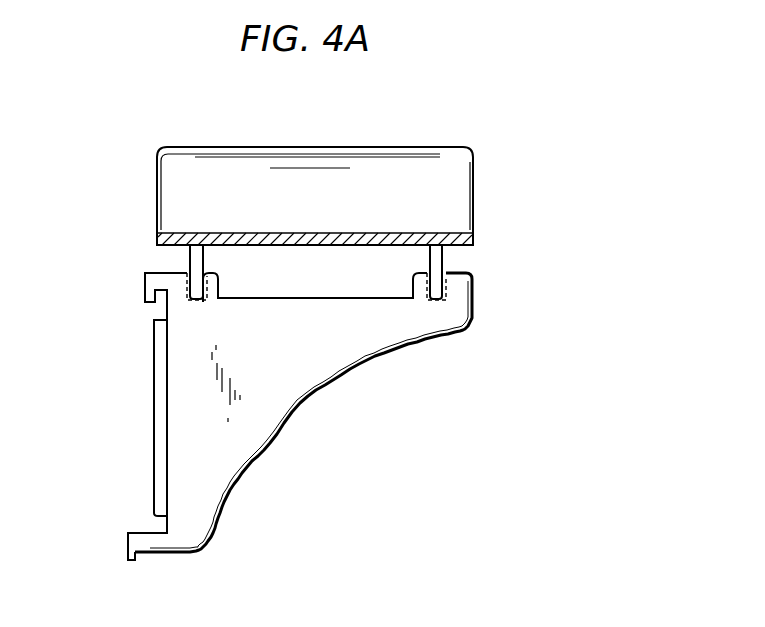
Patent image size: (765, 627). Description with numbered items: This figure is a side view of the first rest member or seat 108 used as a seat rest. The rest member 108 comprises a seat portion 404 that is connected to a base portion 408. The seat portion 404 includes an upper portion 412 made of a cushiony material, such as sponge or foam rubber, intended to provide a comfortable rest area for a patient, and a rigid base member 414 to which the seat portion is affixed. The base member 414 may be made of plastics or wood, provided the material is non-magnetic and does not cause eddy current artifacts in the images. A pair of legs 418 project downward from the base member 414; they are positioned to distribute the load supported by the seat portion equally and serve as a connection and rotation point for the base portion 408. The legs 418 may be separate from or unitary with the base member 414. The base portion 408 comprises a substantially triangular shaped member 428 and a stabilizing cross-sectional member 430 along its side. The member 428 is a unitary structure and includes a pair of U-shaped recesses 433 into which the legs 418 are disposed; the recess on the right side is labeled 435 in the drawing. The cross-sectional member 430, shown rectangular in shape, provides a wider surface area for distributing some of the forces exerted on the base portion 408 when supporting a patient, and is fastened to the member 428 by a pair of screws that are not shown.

The first rest member 108 is at (519, 136).
The seat portion 404 is at (140, 210).
The upper portion 412 is at (307, 153).
The rigid base member 414 is at (473, 243).
The legs 418 is at (189, 256).
The base portion 408 is at (340, 432).
The substantially triangular shaped member 428 is at (337, 347).
The stabilizing cross-sectional member 430 is at (155, 406).
The U-shaped recesses 433 is at (189, 303).
The right peg recess 435 is at (434, 302).